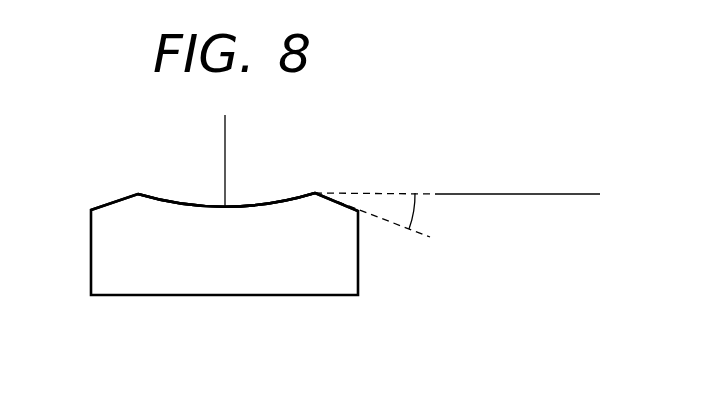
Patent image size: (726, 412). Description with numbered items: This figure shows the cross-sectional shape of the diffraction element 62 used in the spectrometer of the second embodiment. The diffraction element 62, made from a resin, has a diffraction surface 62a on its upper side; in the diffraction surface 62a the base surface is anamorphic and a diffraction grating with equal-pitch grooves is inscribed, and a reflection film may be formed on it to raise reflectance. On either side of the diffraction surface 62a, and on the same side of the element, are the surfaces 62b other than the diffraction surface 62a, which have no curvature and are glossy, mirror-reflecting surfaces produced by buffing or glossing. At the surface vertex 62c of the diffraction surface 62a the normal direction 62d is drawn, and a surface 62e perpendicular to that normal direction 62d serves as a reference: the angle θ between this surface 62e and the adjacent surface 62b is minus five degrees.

The diffraction element 62 is at (358, 263).
The diffraction surface 62a is at (273, 205).
The surface other than the diffraction surface 62b is at (115, 202).
The surface vertex 62c is at (225, 207).
The normal direction 62d is at (225, 130).
The surface perpendicular to the normal direction 62e is at (528, 194).